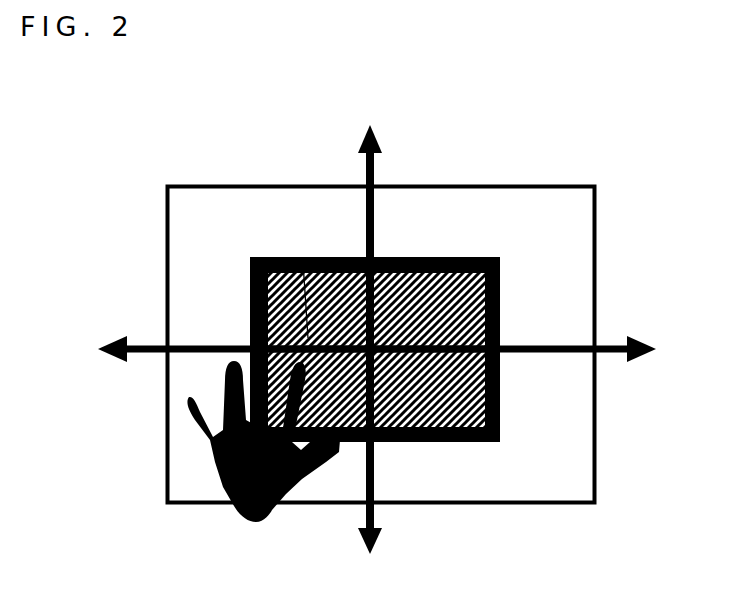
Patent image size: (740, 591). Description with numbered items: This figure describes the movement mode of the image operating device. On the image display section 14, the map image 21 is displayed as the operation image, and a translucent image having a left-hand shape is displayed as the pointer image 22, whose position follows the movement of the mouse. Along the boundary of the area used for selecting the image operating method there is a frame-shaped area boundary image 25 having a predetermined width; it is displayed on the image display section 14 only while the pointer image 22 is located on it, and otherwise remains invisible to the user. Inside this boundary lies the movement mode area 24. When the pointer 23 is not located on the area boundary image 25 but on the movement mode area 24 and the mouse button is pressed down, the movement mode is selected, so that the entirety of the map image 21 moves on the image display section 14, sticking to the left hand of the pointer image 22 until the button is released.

The image display section 14 is at (598, 211).
The map image 21 is at (433, 207).
The pointer image 22 is at (254, 516).
The pointer 23 is at (303, 262).
The movement mode area 24 is at (426, 405).
The area boundary image 25 is at (502, 268).